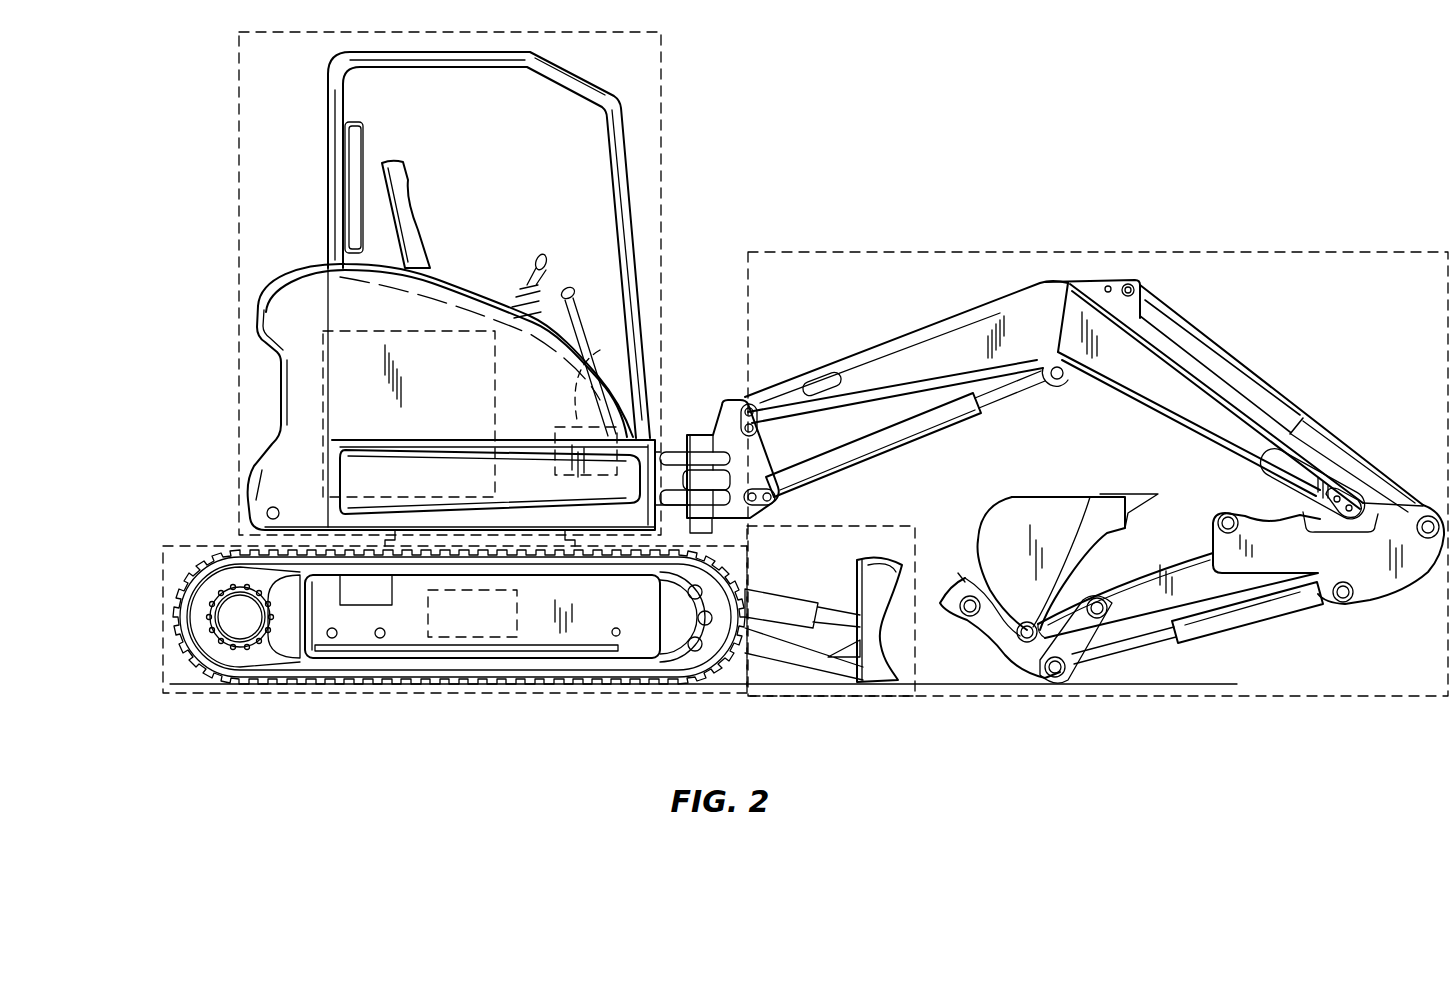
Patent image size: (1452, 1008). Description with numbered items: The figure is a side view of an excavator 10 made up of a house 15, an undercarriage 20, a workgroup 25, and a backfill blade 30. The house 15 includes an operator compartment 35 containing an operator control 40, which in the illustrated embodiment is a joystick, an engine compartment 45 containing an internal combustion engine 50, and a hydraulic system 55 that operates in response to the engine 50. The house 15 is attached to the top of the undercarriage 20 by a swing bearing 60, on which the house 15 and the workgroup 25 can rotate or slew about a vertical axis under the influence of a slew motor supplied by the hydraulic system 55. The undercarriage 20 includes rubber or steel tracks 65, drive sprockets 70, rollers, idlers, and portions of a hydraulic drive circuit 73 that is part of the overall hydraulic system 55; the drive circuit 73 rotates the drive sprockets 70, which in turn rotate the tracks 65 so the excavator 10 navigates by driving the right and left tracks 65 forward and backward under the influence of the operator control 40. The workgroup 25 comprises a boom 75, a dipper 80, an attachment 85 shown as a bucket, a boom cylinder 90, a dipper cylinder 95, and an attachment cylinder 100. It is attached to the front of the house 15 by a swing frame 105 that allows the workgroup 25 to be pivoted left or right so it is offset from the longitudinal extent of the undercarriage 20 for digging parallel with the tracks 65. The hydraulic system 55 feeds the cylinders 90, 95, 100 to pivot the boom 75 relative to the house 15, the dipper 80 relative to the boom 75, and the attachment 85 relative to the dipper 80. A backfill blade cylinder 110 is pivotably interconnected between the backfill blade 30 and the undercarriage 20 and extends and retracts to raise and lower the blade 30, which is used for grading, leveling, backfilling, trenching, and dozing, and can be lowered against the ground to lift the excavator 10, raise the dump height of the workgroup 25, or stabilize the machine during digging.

The excavator 10 is at (1000, 136).
The house 15 is at (237, 125).
The undercarriage 20 is at (160, 600).
The workgroup 25 is at (1220, 245).
The backfill blade 30 is at (872, 650).
The operator compartment 35 is at (613, 100).
The operator control 40 is at (546, 262).
The engine compartment 45 is at (440, 310).
The internal combustion engine 50 is at (382, 323).
The hydraulic system 55 is at (578, 407).
The swing bearing 60 is at (413, 535).
The tracks 65 is at (400, 660).
The drive sprockets 70 is at (243, 650).
The hydraulic drive circuit 73 is at (517, 613).
The boom 75 is at (1053, 310).
The dipper 80 is at (1185, 565).
The attachment 85 is at (1058, 512).
The boom cylinder 90 is at (878, 448).
The dipper cylinder 95 is at (1240, 370).
The attachment cylinder 100 is at (1310, 605).
The swing frame 105 is at (700, 455).
The backfill blade cylinder 110 is at (780, 618).